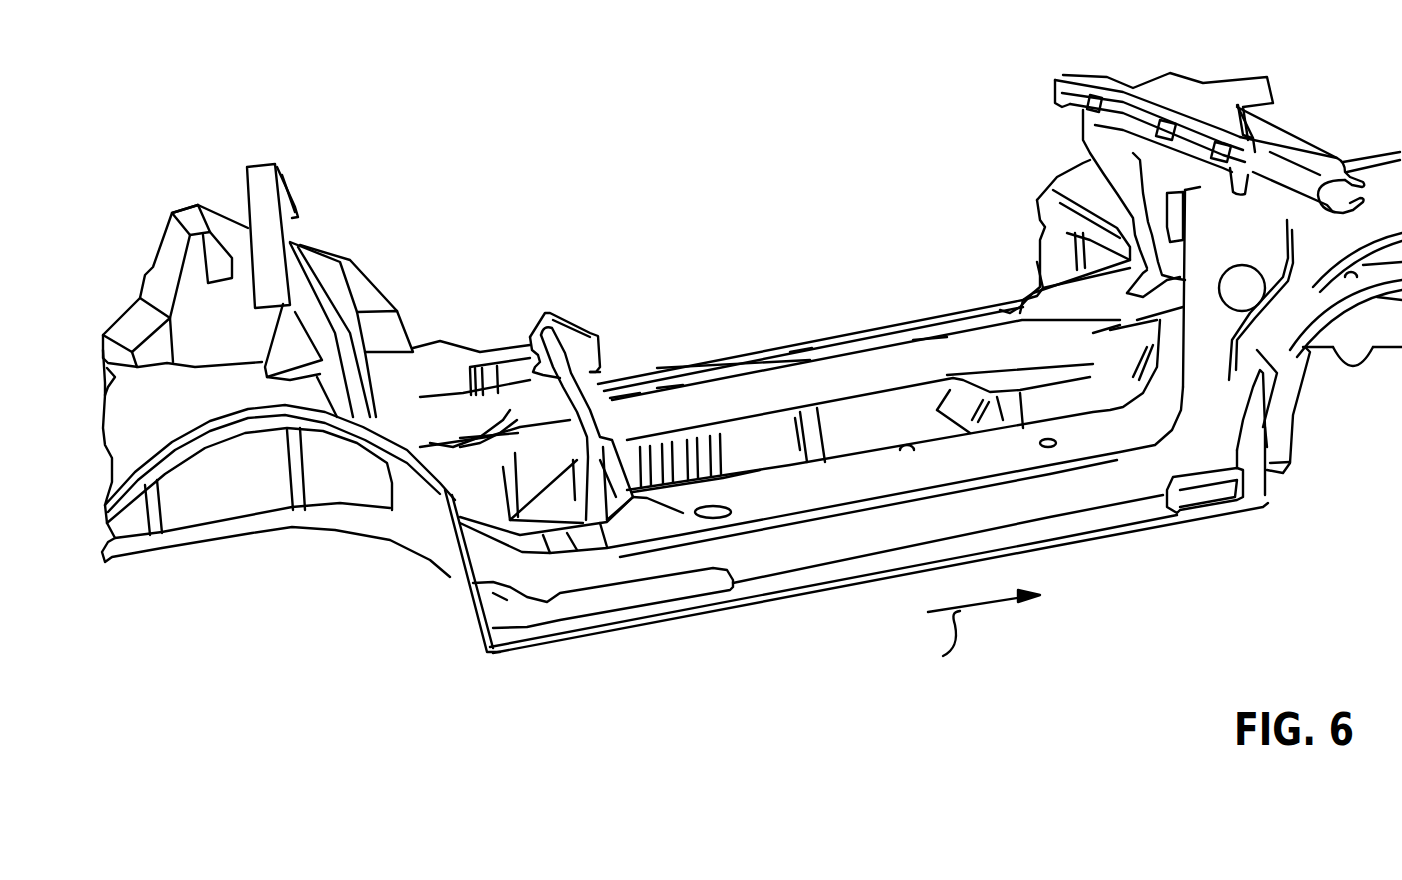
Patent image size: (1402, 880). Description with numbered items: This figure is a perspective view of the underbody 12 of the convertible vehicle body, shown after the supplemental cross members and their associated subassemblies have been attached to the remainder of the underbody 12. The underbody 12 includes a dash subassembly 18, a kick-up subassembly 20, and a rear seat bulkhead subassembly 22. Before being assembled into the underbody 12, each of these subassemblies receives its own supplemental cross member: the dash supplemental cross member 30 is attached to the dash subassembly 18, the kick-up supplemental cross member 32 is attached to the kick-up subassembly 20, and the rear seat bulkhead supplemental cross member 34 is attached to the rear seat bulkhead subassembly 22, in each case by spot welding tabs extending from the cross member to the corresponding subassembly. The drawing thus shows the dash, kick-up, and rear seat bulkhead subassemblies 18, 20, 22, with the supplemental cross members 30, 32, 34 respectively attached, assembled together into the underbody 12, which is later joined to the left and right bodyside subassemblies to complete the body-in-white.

The underbody 12 is at (818, 258).
The dash subassembly 18 is at (1270, 130).
The kick-up subassembly 20 is at (588, 408).
The rear seat bulkhead subassembly 22 is at (262, 208).
The dash supplemental cross member 30 is at (1108, 112).
The kick-up supplemental cross member 32 is at (603, 325).
The rear seat bulkhead supplemental cross member 34 is at (298, 215).